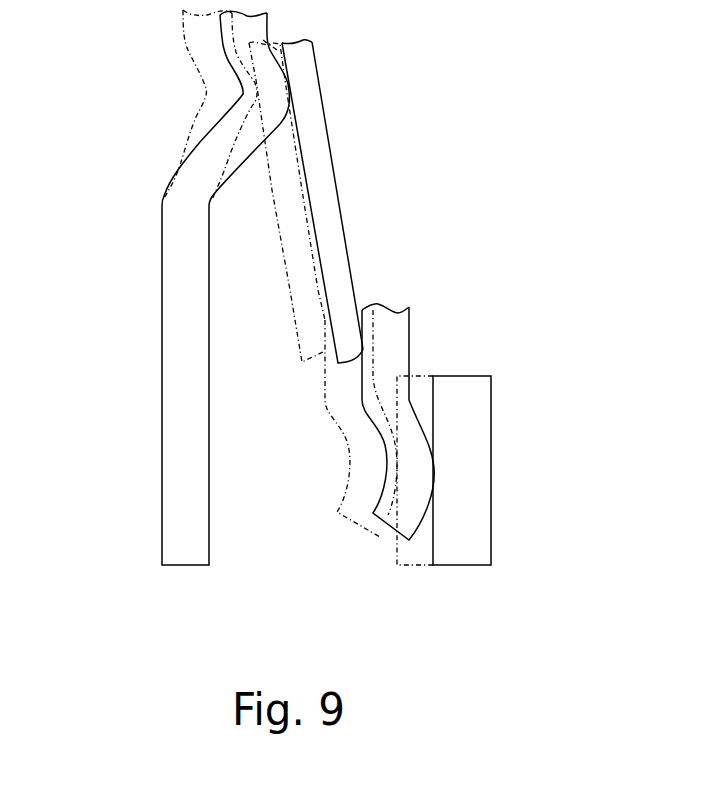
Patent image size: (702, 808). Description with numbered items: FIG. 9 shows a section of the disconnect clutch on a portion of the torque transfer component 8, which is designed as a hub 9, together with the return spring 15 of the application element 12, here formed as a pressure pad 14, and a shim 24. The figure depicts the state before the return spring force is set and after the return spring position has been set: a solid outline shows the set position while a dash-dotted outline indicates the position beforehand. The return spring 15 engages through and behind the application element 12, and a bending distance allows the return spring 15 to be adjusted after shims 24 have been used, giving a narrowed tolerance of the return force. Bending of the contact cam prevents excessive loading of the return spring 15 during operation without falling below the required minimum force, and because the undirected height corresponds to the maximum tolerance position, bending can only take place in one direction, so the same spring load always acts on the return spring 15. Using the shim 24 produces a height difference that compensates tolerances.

The torque transfer component 8 is at (156, 287).
The hub 9 is at (180, 260).
The application element 12 is at (447, 416).
The pressure pad 14 is at (389, 332).
The return spring 15 is at (312, 157).
The shim 24 is at (482, 527).